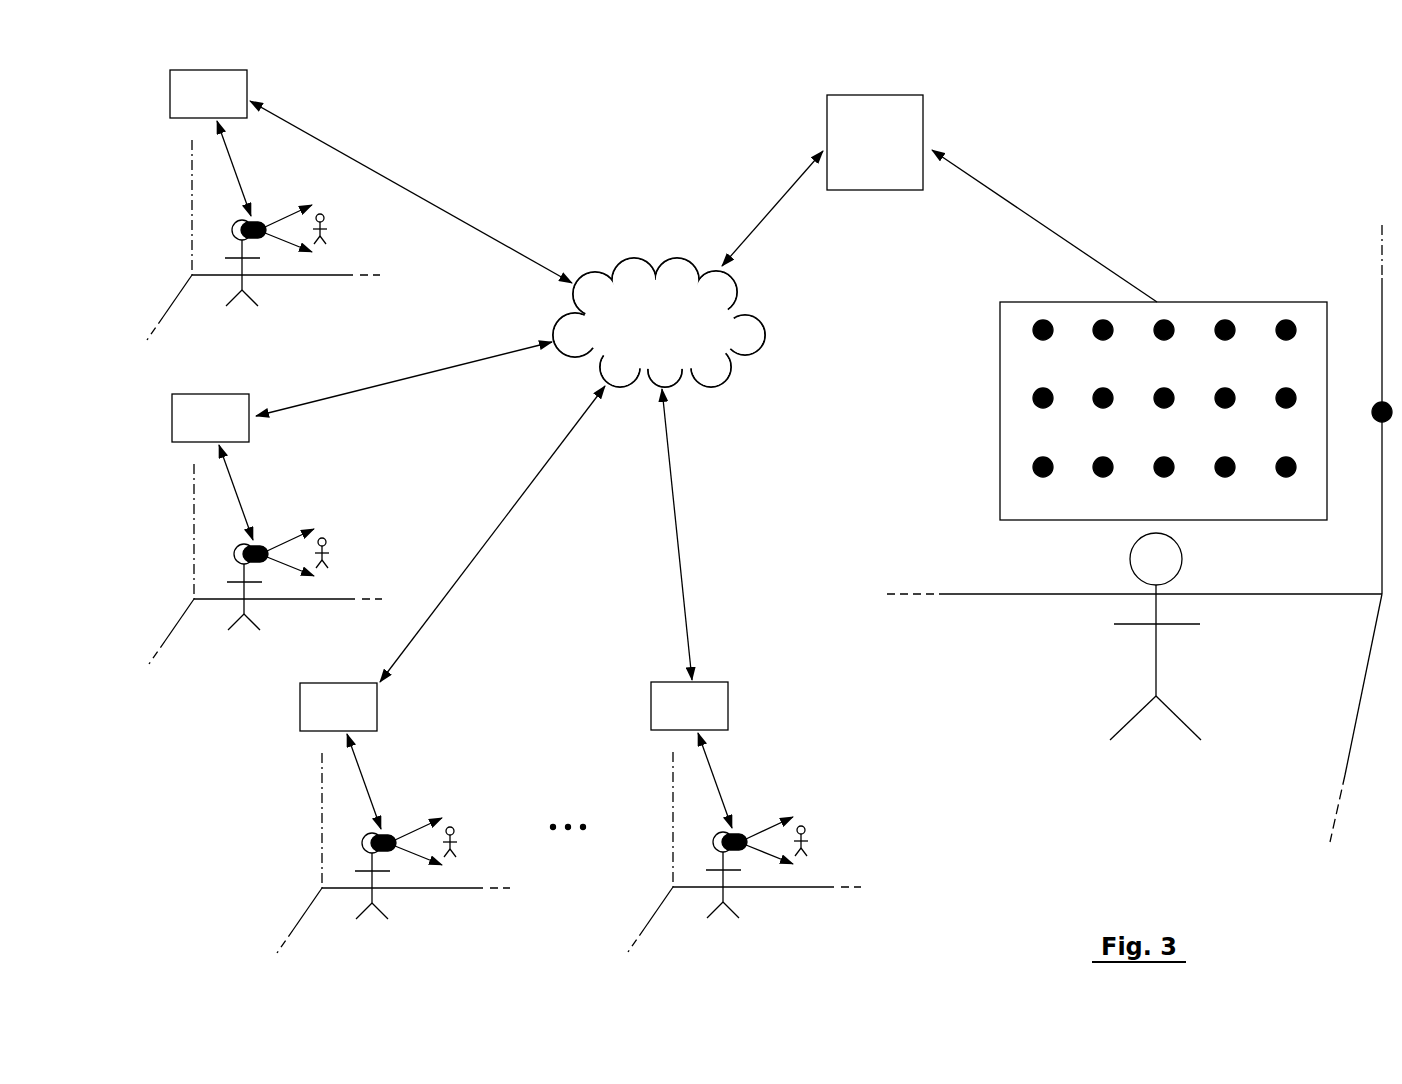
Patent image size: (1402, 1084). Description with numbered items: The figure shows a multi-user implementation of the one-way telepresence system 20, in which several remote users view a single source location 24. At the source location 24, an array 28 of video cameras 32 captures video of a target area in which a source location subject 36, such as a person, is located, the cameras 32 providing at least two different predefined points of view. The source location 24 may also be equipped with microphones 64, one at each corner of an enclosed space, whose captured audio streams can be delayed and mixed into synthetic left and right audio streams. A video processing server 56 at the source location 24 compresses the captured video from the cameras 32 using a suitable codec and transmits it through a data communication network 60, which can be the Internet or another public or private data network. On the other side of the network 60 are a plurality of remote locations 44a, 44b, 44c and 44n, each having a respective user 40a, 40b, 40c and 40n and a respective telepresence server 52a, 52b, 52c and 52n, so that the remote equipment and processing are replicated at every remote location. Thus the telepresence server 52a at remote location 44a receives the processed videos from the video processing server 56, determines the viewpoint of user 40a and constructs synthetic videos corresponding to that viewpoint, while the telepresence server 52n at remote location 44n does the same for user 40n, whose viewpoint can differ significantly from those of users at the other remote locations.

The one-way telepresence system 20 is at (492, 117).
The source location 24 is at (1240, 686).
The array 28 is at (1198, 302).
The video cameras 32 is at (1040, 458).
The source location subject 36 is at (1144, 644).
The user 40a is at (248, 229).
The user 40b is at (250, 553).
The user 40c is at (379, 842).
The user 40n is at (729, 841).
The remote location 44a is at (302, 325).
The remote location 44b is at (304, 649).
The remote location 44c is at (432, 938).
The remote location 44n is at (783, 937).
The telepresence server 52a is at (186, 107).
The telepresence server 52b is at (188, 431).
The telepresence server 52c is at (316, 720).
The telepresence server 52n is at (667, 719).
The video processing server 56 is at (860, 154).
The data communication network 60 is at (638, 332).
The microphones 64 is at (1375, 424).